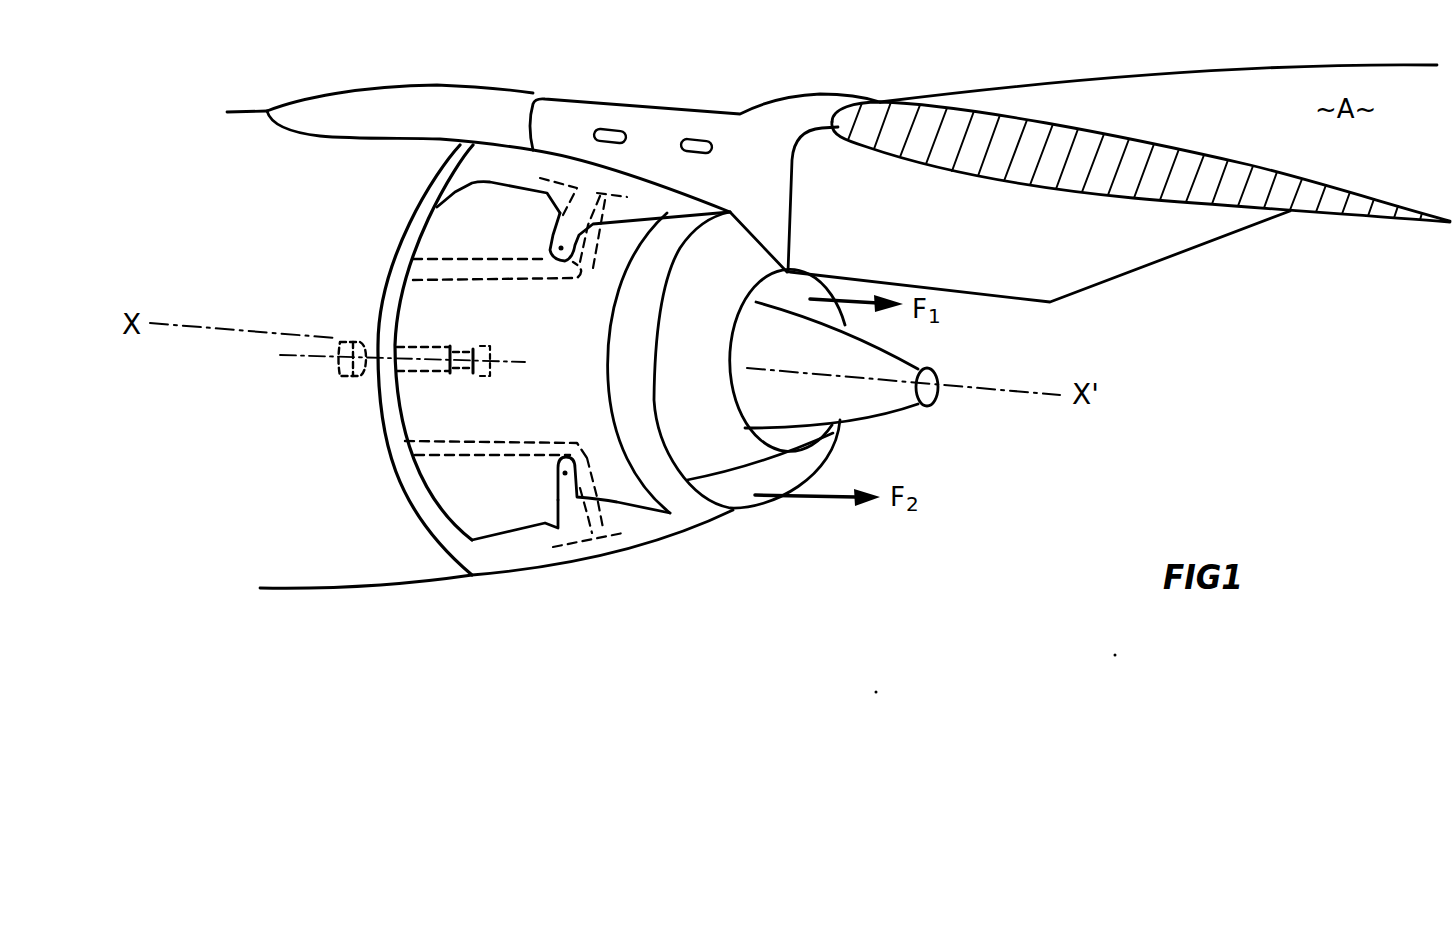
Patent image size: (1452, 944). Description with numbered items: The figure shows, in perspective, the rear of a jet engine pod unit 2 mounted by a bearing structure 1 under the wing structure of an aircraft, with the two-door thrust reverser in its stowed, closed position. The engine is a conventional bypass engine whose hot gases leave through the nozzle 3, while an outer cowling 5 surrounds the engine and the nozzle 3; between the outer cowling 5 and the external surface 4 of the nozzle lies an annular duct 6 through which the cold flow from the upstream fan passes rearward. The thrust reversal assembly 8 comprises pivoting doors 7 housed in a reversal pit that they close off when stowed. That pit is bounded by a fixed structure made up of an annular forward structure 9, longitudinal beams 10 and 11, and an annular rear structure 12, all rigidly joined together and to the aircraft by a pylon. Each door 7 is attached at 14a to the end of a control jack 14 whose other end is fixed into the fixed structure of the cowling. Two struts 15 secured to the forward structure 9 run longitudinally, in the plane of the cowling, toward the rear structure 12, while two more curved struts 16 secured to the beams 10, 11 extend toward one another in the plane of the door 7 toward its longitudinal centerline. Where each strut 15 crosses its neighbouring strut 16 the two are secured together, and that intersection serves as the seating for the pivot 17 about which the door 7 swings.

The bearing structure 1 is at (762, 158).
The jet engine pod unit 2 is at (303, 518).
The nozzle 3 is at (732, 455).
The external surface of the nozzle 4 is at (800, 365).
The outer cowling 5 is at (395, 590).
The annular duct 6 is at (745, 500).
The pivoting doors 7 is at (428, 350).
The thrust reversal assembly 8 is at (647, 566).
The annular forward structure 9 is at (390, 421).
The longitudinal beam 10 is at (493, 155).
The longitudinal beam 11 is at (540, 548).
The annular rear structure 12 is at (636, 313).
The control jack 14 is at (343, 378).
The door attachment point 14a is at (481, 374).
The strut 15 is at (420, 270).
The curved strut 16 is at (587, 263).
The pivot 17 is at (556, 244).